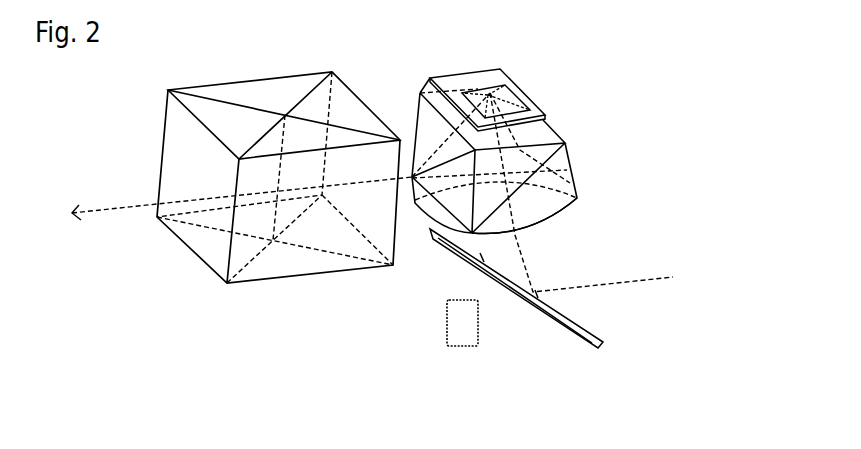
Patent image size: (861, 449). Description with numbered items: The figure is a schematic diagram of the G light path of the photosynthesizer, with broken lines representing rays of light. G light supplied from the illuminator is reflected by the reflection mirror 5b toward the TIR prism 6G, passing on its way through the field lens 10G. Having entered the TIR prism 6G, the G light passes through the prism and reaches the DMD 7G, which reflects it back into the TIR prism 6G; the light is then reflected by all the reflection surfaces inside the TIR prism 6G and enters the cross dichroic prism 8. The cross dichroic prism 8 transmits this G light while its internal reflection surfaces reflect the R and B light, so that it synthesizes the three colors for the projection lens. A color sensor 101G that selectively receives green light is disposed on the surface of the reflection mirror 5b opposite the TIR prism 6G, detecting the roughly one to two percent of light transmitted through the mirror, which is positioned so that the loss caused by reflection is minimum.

The cross dichroic prism 8 is at (370, 86).
The TIR prism 6G is at (573, 165).
The DMD 7G is at (543, 102).
The field lens 10G is at (553, 217).
The reflection mirror 5b is at (595, 332).
The color sensor 101G is at (447, 323).